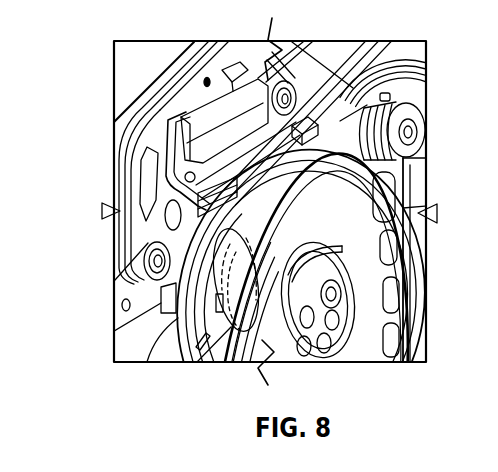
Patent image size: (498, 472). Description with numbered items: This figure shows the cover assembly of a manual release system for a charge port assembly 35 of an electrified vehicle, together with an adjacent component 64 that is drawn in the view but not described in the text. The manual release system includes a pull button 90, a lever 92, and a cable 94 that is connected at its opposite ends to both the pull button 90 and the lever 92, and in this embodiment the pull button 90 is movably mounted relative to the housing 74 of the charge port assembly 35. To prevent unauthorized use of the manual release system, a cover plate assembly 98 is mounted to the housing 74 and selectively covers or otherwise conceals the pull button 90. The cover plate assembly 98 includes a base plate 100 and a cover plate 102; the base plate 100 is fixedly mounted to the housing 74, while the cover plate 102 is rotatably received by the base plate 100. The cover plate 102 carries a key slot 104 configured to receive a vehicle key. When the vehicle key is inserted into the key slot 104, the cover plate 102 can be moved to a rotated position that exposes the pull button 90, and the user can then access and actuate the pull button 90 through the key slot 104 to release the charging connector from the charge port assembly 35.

The charge port assembly 35 is at (383, 69).
The sensor 64 is at (229, 88).
The housing 74 is at (355, 84).
The pull button 90 is at (230, 266).
The lever 92 is at (170, 150).
The cable 94 is at (150, 218).
The cover plate assembly 98 is at (214, 330).
The base plate 100 is at (270, 215).
The cover plate 102 is at (246, 274).
The key slot 104 is at (230, 304).